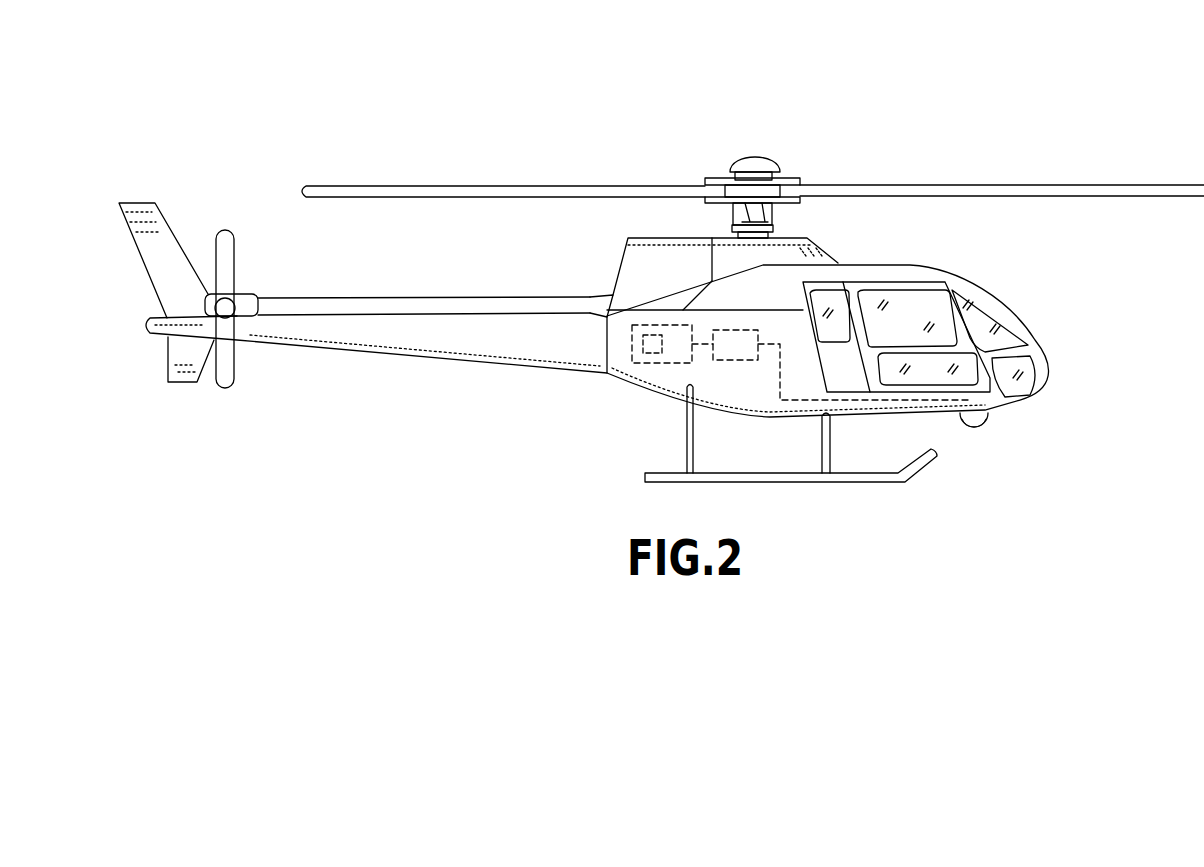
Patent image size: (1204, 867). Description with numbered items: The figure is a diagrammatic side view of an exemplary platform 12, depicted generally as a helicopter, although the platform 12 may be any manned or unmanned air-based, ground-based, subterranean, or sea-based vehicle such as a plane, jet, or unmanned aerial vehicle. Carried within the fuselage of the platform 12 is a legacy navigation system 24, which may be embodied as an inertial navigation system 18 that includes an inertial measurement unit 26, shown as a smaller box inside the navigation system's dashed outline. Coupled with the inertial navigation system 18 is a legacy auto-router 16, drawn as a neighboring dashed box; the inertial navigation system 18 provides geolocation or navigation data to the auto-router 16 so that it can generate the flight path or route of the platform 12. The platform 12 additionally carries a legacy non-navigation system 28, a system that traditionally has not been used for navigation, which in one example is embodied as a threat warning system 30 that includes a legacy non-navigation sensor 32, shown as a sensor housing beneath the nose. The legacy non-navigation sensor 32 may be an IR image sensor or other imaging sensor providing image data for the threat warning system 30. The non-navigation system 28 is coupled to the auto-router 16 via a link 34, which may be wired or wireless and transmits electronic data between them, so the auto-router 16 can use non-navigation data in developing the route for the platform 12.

The platform 12 is at (540, 88).
The auto-router 16 is at (738, 360).
The inertial navigation system 18 is at (559, 302).
The legacy navigation system 24 is at (672, 326).
The inertial measurement unit 26 is at (653, 354).
The legacy non-navigation system 28 is at (978, 473).
The threat warning system 30 is at (982, 431).
The legacy non-navigation sensor 32 is at (987, 415).
The link 34 is at (782, 372).